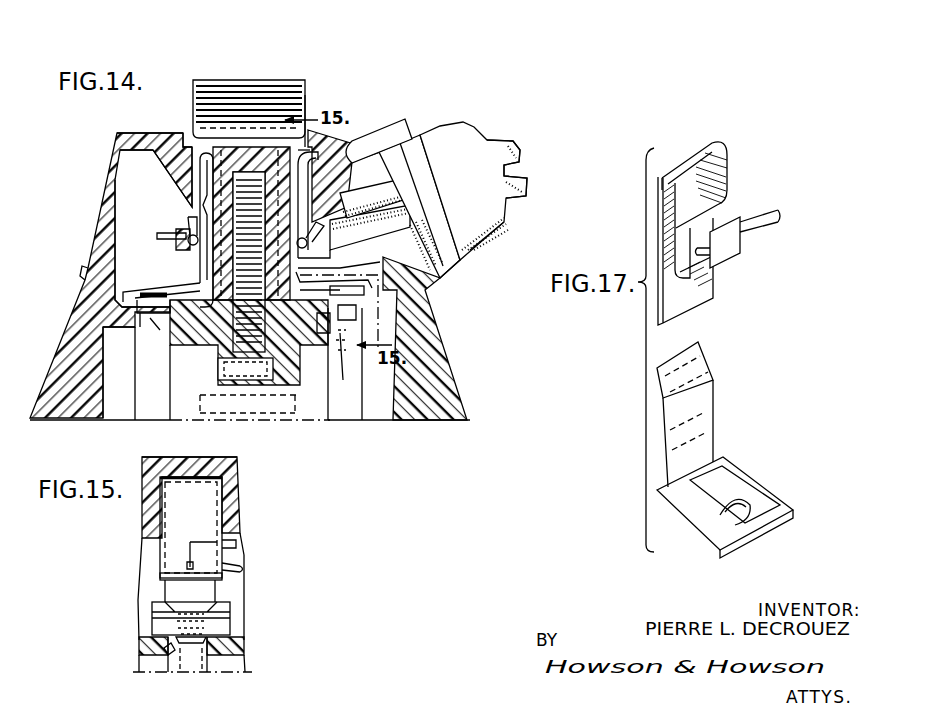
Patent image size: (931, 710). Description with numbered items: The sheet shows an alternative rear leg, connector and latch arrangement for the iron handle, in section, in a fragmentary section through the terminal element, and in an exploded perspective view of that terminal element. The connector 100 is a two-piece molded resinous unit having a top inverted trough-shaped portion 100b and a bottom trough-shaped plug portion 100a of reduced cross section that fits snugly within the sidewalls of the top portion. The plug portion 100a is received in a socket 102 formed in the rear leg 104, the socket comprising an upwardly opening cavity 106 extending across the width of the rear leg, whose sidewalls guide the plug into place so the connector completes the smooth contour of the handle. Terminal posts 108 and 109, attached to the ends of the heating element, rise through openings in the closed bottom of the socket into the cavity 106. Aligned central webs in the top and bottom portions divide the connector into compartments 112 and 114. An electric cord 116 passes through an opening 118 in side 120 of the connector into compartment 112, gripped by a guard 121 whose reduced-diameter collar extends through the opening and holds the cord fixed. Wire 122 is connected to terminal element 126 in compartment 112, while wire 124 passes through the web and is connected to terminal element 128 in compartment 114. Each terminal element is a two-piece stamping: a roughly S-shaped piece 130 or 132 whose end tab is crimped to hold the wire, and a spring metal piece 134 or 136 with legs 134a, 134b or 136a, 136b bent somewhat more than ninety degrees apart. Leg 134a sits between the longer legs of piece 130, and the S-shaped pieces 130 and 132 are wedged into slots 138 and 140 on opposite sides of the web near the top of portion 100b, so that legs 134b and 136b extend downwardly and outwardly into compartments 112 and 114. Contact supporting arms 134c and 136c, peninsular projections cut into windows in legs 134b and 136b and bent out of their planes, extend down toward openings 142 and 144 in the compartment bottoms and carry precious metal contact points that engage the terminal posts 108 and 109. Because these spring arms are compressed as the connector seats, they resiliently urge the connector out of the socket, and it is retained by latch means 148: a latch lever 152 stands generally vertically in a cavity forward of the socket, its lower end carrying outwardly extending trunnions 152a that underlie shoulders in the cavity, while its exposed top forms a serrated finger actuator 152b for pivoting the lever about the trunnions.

In FIG. 14, the connector 100 is at (112, 163).
In FIG. 15, the connector 100 is at (246, 490).
In FIG. 14, the plug portion 100a is at (103, 320).
In FIG. 15, the plug portion 100a is at (309, 650).
In FIG. 14, the top portion 100b is at (140, 133).
In FIG. 15, the top portion 100b is at (287, 452).
In FIG. 14, the socket 102 is at (84, 262).
In FIG. 14, the rear leg 104 is at (449, 370).
In FIG. 14, the cavity 106 is at (108, 416).
In FIG. 14, the terminal post 108 is at (360, 410).
In FIG. 15, the terminal post 108 is at (196, 664).
In FIG. 14, the terminal post 109 is at (157, 408).
In FIG. 14, the compartment 112 is at (387, 146).
In FIG. 15, the compartment 112 is at (234, 543).
In FIG. 14, the compartment 114 is at (125, 180).
In FIG. 14, the electric cord 116 is at (490, 140).
In FIG. 14, the opening 118 is at (425, 158).
In FIG. 14, the side 120 is at (468, 255).
In FIG. 14, the guard 121 is at (497, 221).
In FIG. 14, the wire 122 is at (367, 195).
In FIG. 15, the wire 122 is at (234, 565).
In FIG. 17, the wire 122 is at (774, 212).
In FIG. 14, the wire 124 is at (157, 230).
In FIG. 14, the terminal element 126 is at (303, 215).
In FIG. 15, the terminal element 126 is at (175, 550).
In FIG. 17, the terminal element 126 is at (713, 298).
In FIG. 14, the terminal element 128 is at (186, 130).
In FIG. 14, the S-shaped piece 130 is at (309, 195).
In FIG. 15, the S-shaped piece 130 is at (175, 512).
In FIG. 17, the S-shaped piece 130 is at (730, 178).
In FIG. 14, the S-shaped piece 132 is at (192, 188).
In FIG. 14, the spring metal piece 134 is at (308, 264).
In FIG. 15, the spring metal piece 134 is at (172, 586).
In FIG. 17, the spring metal piece 134 is at (706, 421).
In FIG. 14, the leg 134a is at (330, 287).
In FIG. 15, the leg 134a is at (210, 598).
In FIG. 17, the leg 134a is at (701, 376).
In FIG. 14, the leg 134b is at (420, 281).
In FIG. 15, the leg 134b is at (230, 608).
In FIG. 17, the leg 134b is at (750, 482).
In FIG. 14, the contact supporting arm 134c is at (349, 363).
In FIG. 15, the contact supporting arm 134c is at (185, 617).
In FIG. 17, the contact supporting arm 134c is at (737, 510).
In FIG. 14, the spring metal piece 136 is at (157, 236).
In FIG. 14, the leg 136a is at (183, 279).
In FIG. 14, the leg 136b is at (177, 297).
In FIG. 14, the contact supporting arm 136c is at (137, 326).
In FIG. 14, the slot 138 is at (330, 165).
In FIG. 15, the slot 138 is at (175, 476).
In FIG. 14, the slot 140 is at (142, 234).
In FIG. 14, the opening 142 is at (352, 327).
In FIG. 15, the opening 142 is at (166, 652).
In FIG. 14, the opening 144 is at (240, 352).
In FIG. 14, the latch means 148 is at (208, 78).
In FIG. 14, the latch lever 152 is at (258, 49).
In FIG. 14, the trunnions 152a is at (253, 385).
In FIG. 14, the serrated finger actuator 152b is at (300, 98).